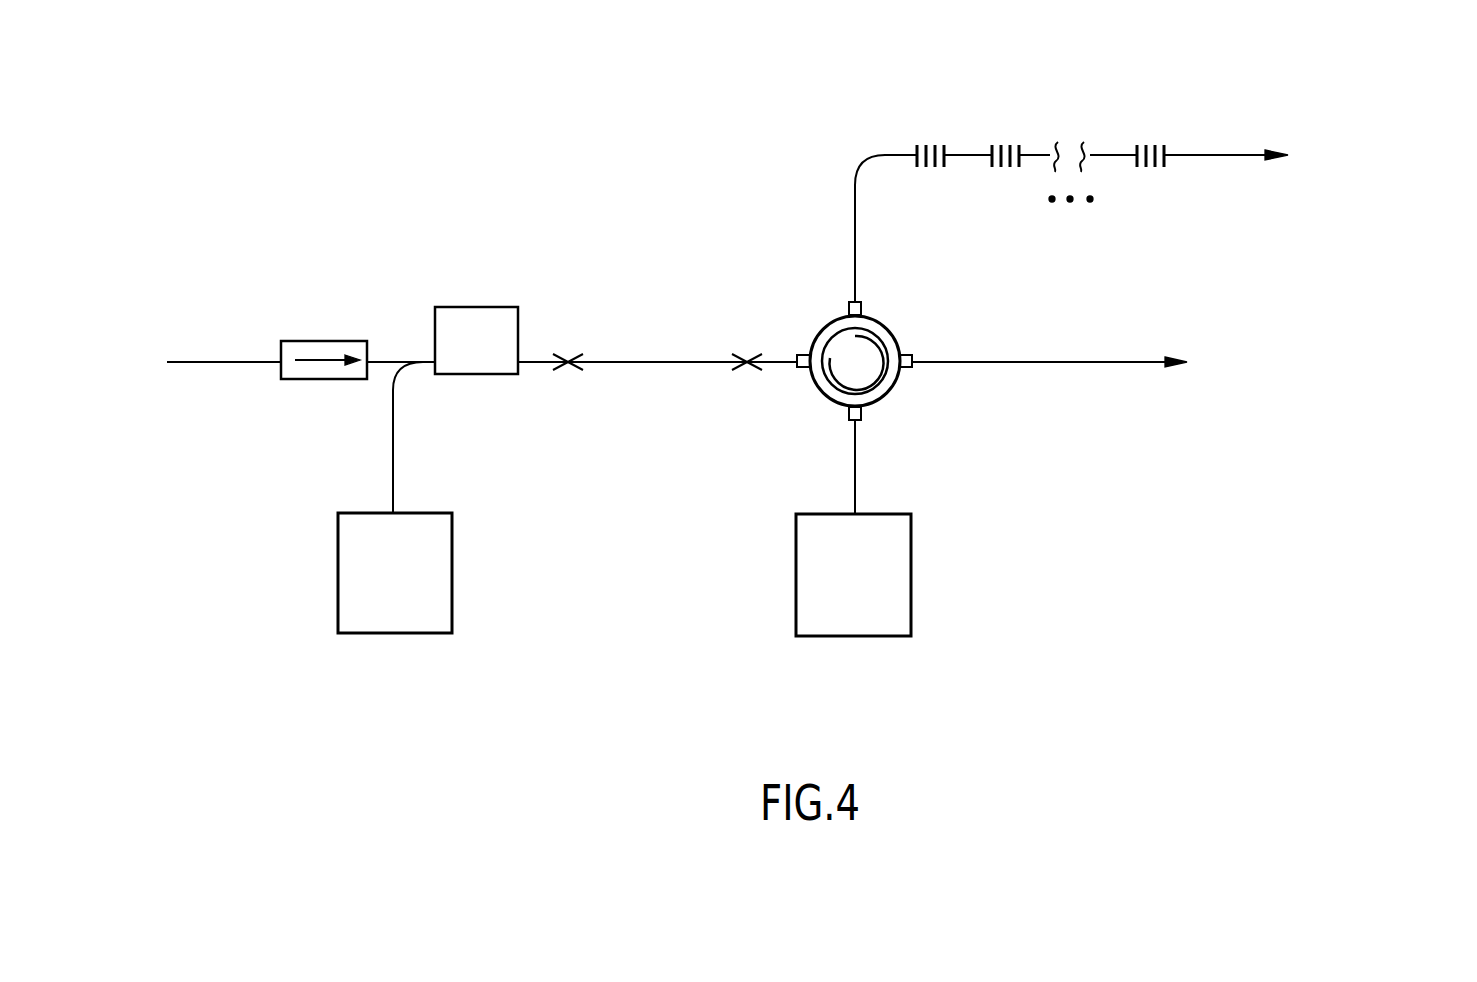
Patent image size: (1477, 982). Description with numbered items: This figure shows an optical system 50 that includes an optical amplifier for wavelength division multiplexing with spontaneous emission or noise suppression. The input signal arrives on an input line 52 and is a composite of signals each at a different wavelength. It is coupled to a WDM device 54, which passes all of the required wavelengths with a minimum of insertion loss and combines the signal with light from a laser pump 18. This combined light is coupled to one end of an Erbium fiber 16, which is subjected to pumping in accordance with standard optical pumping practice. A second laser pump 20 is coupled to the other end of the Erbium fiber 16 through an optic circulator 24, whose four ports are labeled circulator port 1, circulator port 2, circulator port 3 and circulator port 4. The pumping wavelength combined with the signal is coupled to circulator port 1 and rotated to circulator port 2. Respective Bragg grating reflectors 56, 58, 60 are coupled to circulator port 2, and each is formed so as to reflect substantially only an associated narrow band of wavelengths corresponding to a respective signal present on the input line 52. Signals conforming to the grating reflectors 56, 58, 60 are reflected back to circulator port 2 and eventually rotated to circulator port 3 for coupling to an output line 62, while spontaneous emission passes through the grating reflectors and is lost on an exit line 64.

The circulator port 1 is at (803, 355).
The circulator port 2 is at (858, 302).
The circulator port 3 is at (907, 368).
The circulator port 4 is at (849, 413).
The Erbium fiber 16 is at (662, 362).
The laser pump 18 is at (338, 575).
The laser pump 20 is at (796, 578).
The optic circulator 24 is at (932, 358).
The optical system 50 is at (758, 148).
The input line 52 is at (226, 362).
The WDM device 54 is at (452, 307).
The Bragg grating reflector 56 is at (938, 145).
The Bragg grating reflector 58 is at (1009, 145).
The Bragg grating reflector 60 is at (1152, 145).
The output line 62 is at (1113, 362).
The exit line 64 is at (1220, 155).